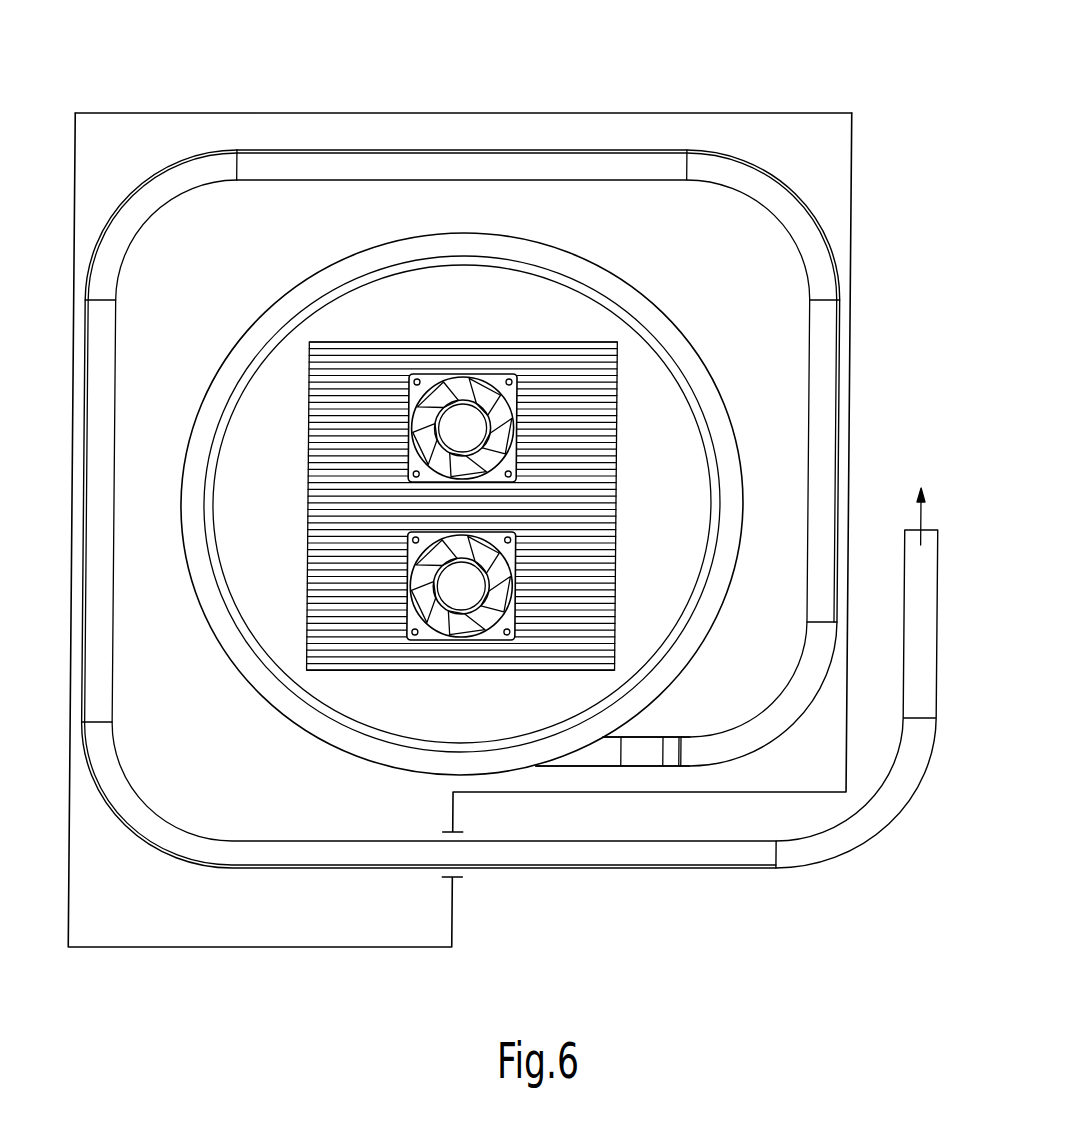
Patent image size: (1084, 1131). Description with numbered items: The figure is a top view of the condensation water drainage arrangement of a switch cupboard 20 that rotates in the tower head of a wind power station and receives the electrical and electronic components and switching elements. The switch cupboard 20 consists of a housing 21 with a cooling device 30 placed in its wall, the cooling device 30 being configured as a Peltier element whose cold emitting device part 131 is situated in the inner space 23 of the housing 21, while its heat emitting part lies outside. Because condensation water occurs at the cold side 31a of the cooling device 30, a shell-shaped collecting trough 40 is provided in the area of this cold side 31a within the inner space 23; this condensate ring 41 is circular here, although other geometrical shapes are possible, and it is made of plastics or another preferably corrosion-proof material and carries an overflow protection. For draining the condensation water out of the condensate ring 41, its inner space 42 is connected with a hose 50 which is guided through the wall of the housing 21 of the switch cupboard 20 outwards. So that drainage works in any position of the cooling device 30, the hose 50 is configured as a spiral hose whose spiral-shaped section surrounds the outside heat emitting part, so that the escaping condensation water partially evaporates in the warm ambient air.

The switch cupboard 20 is at (692, 110).
The housing 21 is at (598, 110).
The inner space 23 is at (692, 264).
The cooling device 30 is at (382, 351).
The cold emitting device part 131 is at (465, 333).
The cold side 31a is at (307, 565).
The collecting trough 40 is at (680, 327).
The condensate ring 41 is at (461, 510).
The inner space of the condensate ring 42 is at (660, 460).
The hose 50 is at (637, 870).